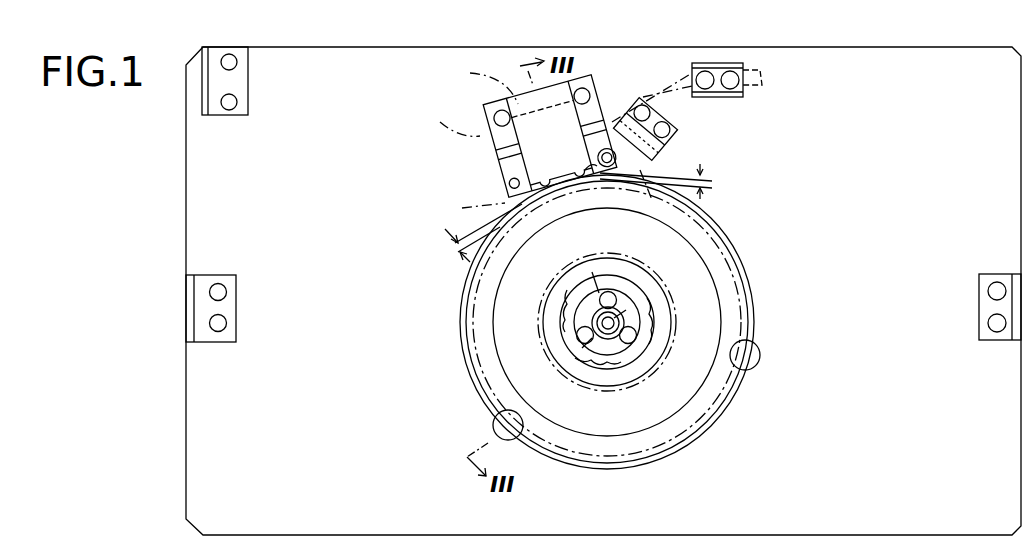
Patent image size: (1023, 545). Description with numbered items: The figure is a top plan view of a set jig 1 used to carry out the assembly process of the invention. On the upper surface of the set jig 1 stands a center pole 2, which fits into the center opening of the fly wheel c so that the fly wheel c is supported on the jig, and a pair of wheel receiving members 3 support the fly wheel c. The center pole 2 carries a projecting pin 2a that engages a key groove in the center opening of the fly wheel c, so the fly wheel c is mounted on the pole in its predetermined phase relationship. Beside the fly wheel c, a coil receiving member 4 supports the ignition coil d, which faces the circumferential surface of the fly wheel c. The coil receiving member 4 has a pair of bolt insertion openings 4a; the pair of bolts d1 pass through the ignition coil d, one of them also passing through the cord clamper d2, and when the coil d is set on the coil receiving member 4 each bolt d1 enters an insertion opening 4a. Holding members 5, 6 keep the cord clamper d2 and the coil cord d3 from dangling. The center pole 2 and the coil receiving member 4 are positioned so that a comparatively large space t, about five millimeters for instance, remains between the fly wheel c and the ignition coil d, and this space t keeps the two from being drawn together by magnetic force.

The set jig 1 is at (840, 45).
The center pole 2 is at (618, 343).
The pin 2a is at (612, 312).
The wheel receiving members 3 is at (495, 424).
The coil receiving member 4 is at (482, 128).
The bolt insertion openings 4a is at (508, 181).
The holding member 5 is at (680, 136).
The holding member 6 is at (725, 64).
The fly wheel c is at (755, 312).
The ignition coil d is at (495, 78).
The bolts d1 is at (622, 222).
The cord clamper d2 is at (647, 173).
The coil cord d3 is at (667, 85).
The space t is at (577, 215).